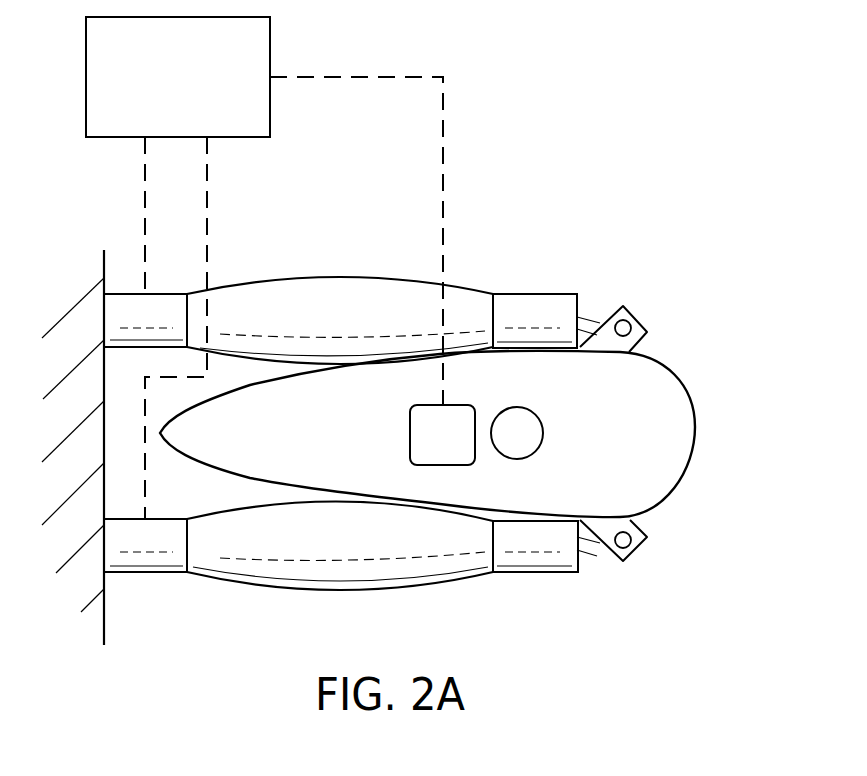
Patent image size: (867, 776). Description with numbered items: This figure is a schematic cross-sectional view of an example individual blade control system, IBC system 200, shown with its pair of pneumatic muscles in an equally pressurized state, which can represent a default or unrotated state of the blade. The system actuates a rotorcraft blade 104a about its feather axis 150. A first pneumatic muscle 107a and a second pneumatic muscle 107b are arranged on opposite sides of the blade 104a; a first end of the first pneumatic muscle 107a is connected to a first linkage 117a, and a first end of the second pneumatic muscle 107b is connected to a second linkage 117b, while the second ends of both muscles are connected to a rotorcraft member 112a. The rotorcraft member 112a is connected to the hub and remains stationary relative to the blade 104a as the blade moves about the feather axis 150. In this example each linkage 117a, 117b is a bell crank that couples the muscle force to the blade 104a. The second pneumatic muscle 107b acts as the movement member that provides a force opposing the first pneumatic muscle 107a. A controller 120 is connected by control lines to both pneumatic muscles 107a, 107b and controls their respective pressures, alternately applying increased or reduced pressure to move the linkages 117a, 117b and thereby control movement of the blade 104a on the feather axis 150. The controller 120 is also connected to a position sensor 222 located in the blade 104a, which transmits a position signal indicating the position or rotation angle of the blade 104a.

The IBC system 200 is at (553, 82).
The controller 120 is at (203, 90).
The rotorcraft member 112a is at (106, 604).
The first pneumatic muscle 107a is at (340, 277).
The second pneumatic muscle 107b is at (338, 592).
The first linkage 117a is at (637, 318).
The second linkage 117b is at (640, 548).
The blade 104a is at (696, 421).
The position sensor 222 is at (408, 434).
The feather axis 150 is at (544, 437).